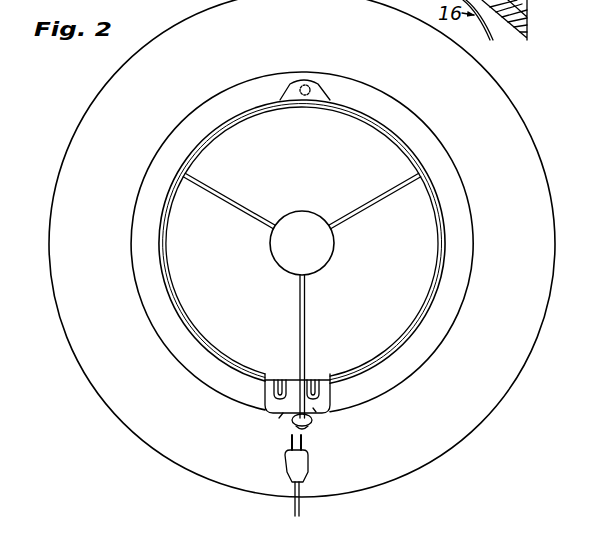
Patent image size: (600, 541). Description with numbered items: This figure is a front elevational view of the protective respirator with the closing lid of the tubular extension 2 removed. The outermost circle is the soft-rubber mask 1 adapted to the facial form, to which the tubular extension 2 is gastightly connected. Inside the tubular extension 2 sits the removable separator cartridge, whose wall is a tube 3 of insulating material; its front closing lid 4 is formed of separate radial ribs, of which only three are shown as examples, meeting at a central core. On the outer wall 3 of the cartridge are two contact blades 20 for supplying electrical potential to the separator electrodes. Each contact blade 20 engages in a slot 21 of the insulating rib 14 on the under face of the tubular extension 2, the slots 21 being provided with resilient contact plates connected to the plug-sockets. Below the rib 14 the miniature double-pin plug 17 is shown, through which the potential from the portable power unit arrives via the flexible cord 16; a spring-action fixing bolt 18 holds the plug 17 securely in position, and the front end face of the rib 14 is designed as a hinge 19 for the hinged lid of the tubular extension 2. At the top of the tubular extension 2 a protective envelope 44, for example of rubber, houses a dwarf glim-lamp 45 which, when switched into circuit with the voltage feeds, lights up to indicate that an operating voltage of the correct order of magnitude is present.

The mask 1 is at (94, 91).
The tubular extension 2 is at (242, 108).
The tube of insulating material 3 is at (201, 329).
The front closing lid 4 is at (302, 209).
The rib of insulating material 14 is at (279, 418).
The flexible cord 16 is at (294, 506).
The miniature double-pin plug 17 is at (307, 476).
The spring-action fixing bolt 18 is at (306, 426).
The hinge 19 is at (313, 408).
The contact blades 20 is at (283, 379).
The slot 21 is at (270, 411).
The protective envelope 44 is at (297, 81).
The dwarf glim-lamp 45 is at (316, 85).